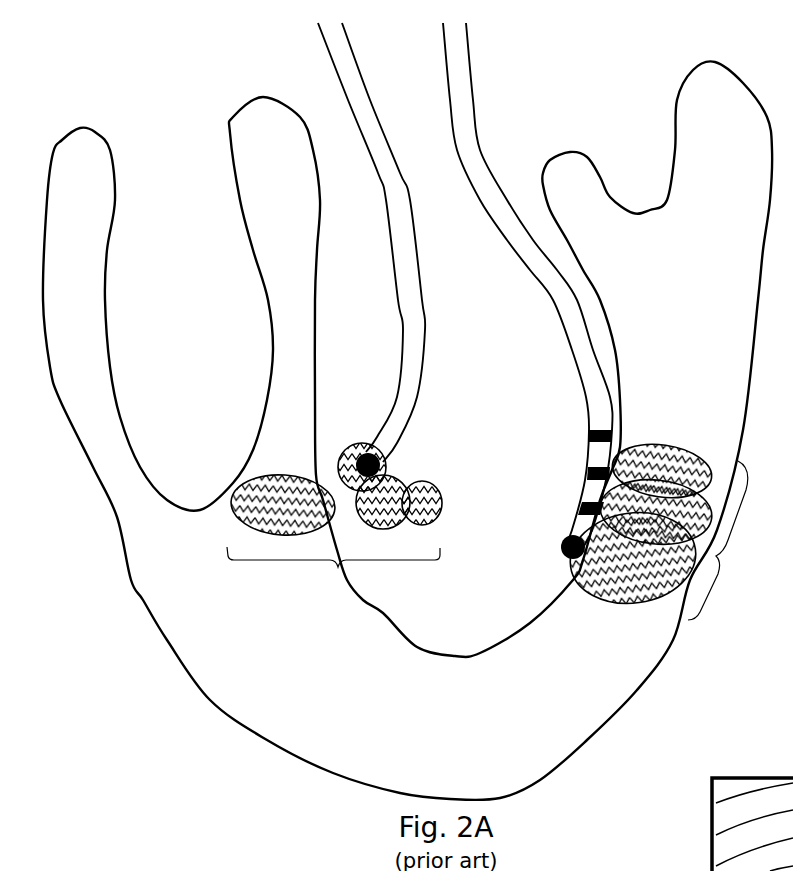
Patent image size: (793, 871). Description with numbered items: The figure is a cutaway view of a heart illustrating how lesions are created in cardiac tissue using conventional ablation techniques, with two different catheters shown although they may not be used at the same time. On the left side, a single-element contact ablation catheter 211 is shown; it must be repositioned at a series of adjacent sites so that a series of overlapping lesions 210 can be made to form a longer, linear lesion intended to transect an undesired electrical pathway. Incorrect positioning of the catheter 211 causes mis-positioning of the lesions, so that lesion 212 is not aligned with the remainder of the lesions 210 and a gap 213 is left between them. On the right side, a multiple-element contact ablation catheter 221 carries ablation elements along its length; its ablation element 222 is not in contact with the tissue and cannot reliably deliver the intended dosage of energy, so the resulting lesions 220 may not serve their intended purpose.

The lesions 210 is at (333, 537).
The single-element contact ablation catheter 211 is at (432, 388).
The lesion 212 is at (362, 432).
The gap 213 is at (345, 506).
The lesions 220 is at (675, 529).
The multiple-element contact ablation catheter 221 is at (580, 407).
The ablation element 222 is at (620, 432).